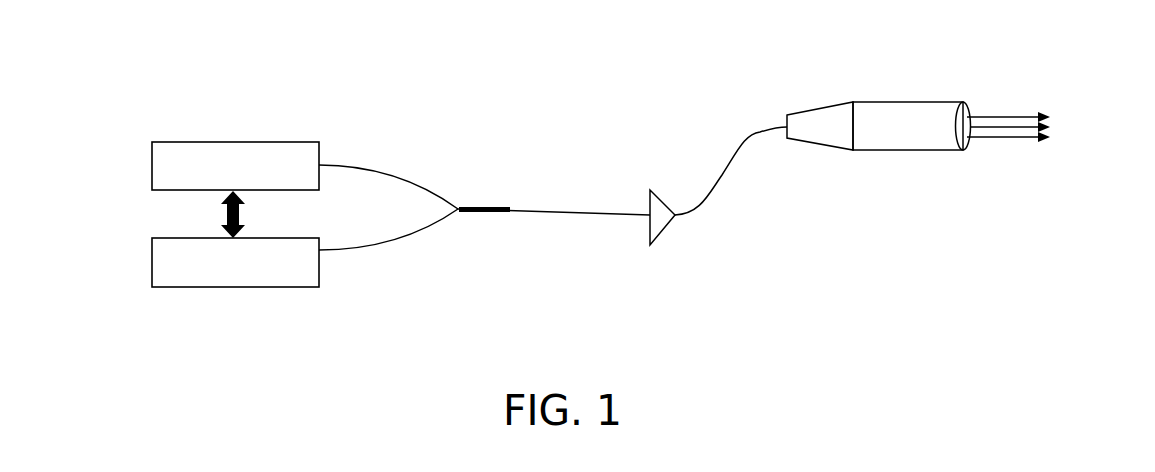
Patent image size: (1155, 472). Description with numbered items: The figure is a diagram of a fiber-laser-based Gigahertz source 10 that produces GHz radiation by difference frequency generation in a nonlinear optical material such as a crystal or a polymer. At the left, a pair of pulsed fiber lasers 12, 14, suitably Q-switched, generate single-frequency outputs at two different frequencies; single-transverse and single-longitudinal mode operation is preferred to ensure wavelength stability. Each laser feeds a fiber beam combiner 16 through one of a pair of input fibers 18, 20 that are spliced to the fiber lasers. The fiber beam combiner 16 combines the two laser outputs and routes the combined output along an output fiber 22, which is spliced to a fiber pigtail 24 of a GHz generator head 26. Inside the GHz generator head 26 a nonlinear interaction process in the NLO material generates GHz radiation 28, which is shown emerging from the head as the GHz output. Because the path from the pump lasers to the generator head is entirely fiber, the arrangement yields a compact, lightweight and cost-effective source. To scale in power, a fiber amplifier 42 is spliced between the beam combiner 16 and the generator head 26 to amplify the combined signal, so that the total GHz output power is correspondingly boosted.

The Gigahertz source 10 is at (332, 106).
The pulsed fiber laser 12 is at (188, 142).
The pulsed fiber laser 14 is at (220, 287).
The fiber beam combiner 16 is at (477, 230).
The input fiber 18 is at (407, 190).
The input fiber 20 is at (437, 218).
The output fiber 22 is at (555, 223).
The fiber pigtail 24 is at (758, 133).
The GHz generator head 26 is at (913, 103).
The GHz radiation 28 is at (1005, 137).
The fiber amplifier 42 is at (673, 238).